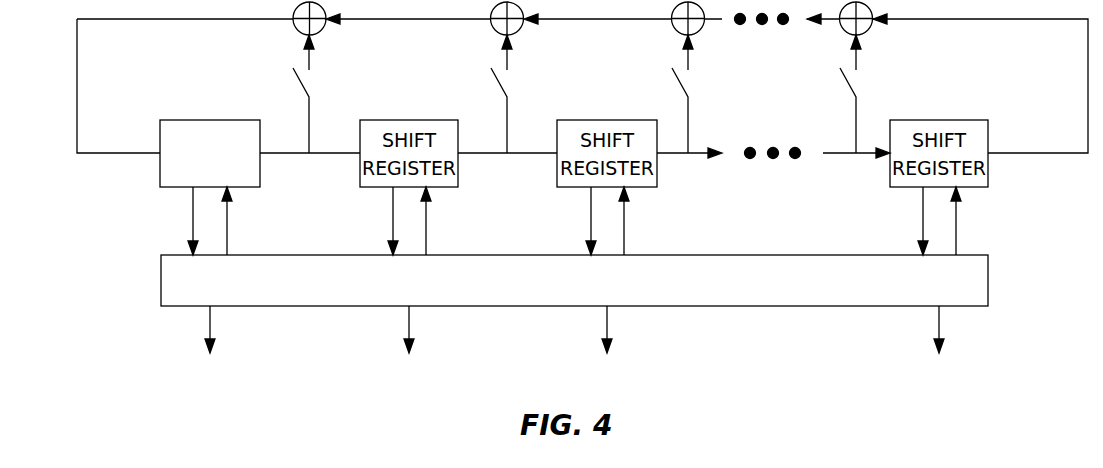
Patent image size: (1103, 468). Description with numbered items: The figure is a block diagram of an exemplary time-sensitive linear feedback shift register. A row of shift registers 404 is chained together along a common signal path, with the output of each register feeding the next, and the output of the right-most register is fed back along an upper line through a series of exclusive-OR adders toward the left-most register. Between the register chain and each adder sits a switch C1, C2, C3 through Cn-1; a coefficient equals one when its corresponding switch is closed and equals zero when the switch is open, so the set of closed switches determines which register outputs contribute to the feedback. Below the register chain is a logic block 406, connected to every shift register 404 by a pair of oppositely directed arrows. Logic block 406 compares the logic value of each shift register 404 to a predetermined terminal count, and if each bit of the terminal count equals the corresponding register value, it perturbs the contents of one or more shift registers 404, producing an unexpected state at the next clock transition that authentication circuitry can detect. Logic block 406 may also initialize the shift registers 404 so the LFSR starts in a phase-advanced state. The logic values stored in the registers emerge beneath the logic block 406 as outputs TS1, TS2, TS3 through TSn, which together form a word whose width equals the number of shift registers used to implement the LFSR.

The shift register 404 is at (192, 119).
The logic block 406 is at (260, 255).
The switch C1 is at (318, 94).
The switch C2 is at (516, 94).
The switch C3 is at (697, 94).
The switch Cn-1 is at (875, 94).
The logic value TS1 is at (209, 344).
The logic value TS2 is at (408, 344).
The logic value TS3 is at (606, 344).
The logic value TSn is at (938, 345).